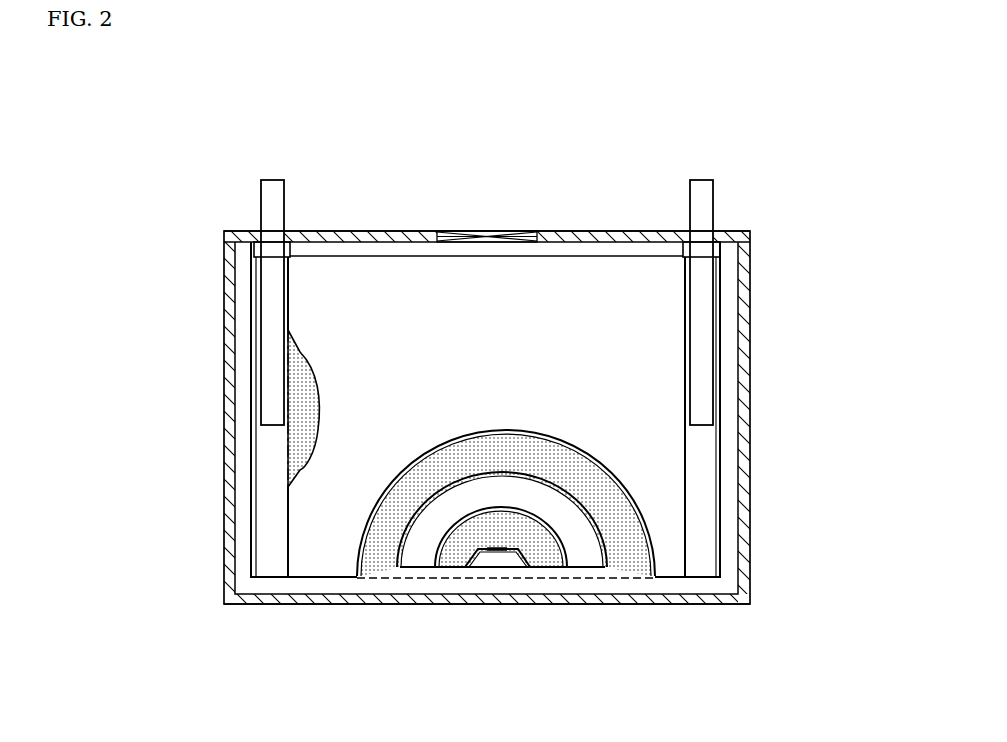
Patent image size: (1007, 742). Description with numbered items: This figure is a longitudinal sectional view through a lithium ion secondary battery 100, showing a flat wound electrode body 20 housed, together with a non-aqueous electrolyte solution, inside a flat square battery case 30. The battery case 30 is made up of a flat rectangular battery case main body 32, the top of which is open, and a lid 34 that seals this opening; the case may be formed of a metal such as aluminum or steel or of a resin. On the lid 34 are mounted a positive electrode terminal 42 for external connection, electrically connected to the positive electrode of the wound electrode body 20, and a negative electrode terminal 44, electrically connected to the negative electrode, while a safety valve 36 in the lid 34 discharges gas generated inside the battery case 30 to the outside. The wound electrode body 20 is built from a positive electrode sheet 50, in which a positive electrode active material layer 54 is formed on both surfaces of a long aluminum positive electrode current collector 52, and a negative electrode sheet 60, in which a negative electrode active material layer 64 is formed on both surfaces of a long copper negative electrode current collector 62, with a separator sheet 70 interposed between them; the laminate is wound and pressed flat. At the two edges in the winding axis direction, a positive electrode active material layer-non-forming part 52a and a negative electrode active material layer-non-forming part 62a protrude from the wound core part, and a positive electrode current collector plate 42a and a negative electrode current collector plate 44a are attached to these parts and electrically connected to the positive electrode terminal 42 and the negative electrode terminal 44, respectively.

The lithium ion secondary battery 100 is at (752, 197).
The wound electrode body 20 is at (380, 285).
The battery case 30 is at (753, 333).
The battery case main body 32 is at (748, 581).
The lid 34 is at (653, 231).
The safety valve 36 is at (487, 231).
The positive electrode terminal 42 is at (273, 184).
The positive electrode current collector plate 42a is at (275, 318).
The negative electrode terminal 44 is at (700, 181).
The negative electrode current collector plate 44a is at (702, 287).
The positive electrode sheet 50 is at (380, 560).
The positive electrode current collector 52 is at (250, 482).
The positive electrode active material layer-non-forming part 52a is at (268, 554).
The positive electrode active material layer 54 is at (310, 383).
The negative electrode sheet 60 is at (452, 558).
The negative electrode current collector 62 is at (727, 435).
The negative electrode active material layer-non-forming part 62a is at (708, 483).
The negative electrode active material layer 64 is at (481, 633).
The separator sheet 70 is at (323, 513).